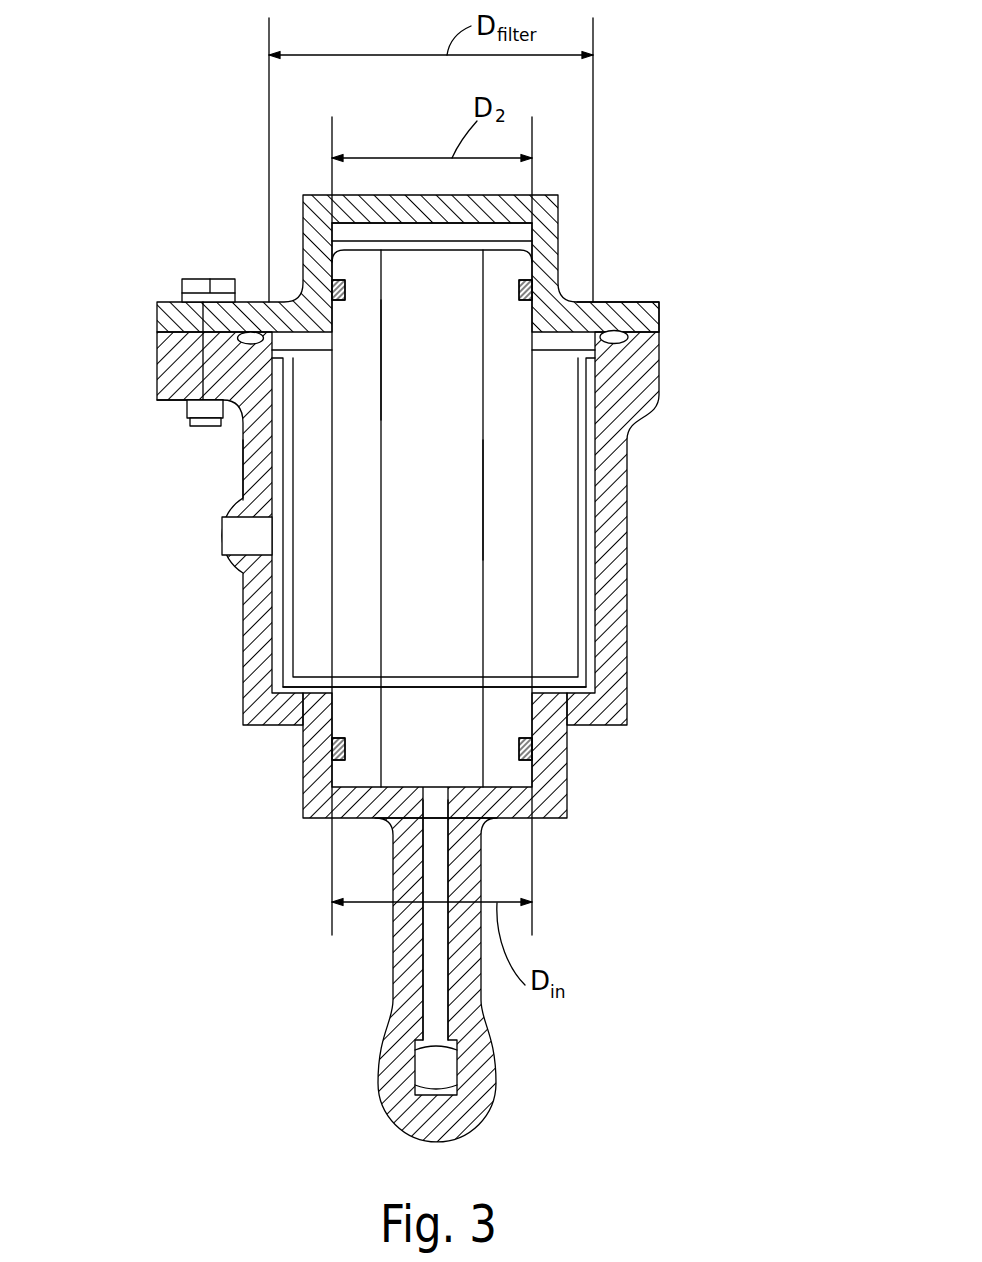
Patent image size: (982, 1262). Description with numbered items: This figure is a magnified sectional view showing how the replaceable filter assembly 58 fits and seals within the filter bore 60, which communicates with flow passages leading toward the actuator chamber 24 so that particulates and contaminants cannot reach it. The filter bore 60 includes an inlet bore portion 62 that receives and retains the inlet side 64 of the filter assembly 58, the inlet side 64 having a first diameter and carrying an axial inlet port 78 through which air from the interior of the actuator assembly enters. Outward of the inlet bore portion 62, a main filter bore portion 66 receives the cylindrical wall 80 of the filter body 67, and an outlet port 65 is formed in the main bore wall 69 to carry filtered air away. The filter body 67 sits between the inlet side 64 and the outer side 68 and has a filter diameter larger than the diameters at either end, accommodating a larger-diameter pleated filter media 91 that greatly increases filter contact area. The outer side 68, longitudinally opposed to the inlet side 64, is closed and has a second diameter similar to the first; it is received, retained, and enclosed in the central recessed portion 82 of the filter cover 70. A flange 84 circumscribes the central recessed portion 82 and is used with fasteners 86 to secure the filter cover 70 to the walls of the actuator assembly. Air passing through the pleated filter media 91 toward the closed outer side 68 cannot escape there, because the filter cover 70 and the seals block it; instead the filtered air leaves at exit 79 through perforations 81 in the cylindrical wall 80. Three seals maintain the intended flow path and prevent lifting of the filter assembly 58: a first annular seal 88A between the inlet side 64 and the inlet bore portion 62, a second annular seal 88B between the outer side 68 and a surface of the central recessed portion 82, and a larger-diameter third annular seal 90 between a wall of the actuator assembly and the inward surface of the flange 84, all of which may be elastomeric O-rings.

The actuator chamber 24 is at (664, 372).
The replaceable filter assembly 58 is at (447, 276).
The filter bore 60 is at (591, 621).
The inlet bore portion 62 is at (380, 818).
The inlet side 64 is at (427, 728).
The outlet port 65 is at (248, 537).
The main filter bore portion 66 is at (335, 567).
The filter body 67 is at (287, 618).
The outer side 68 is at (332, 196).
The main bore wall 69 is at (243, 441).
The filter cover 70 is at (562, 206).
The axial inlet port 78 is at (435, 795).
The exit 79 is at (306, 497).
The cylindrical wall 80 is at (587, 507).
The perforations 81 is at (587, 550).
The central recessed portion 82 is at (408, 295).
The flange 84 is at (648, 299).
The fastener 86 is at (182, 288).
The first annular seal 88A is at (568, 756).
The second annular seal 88B is at (336, 286).
The third annular seal 90 is at (157, 369).
The pleated filter media 91 is at (410, 457).